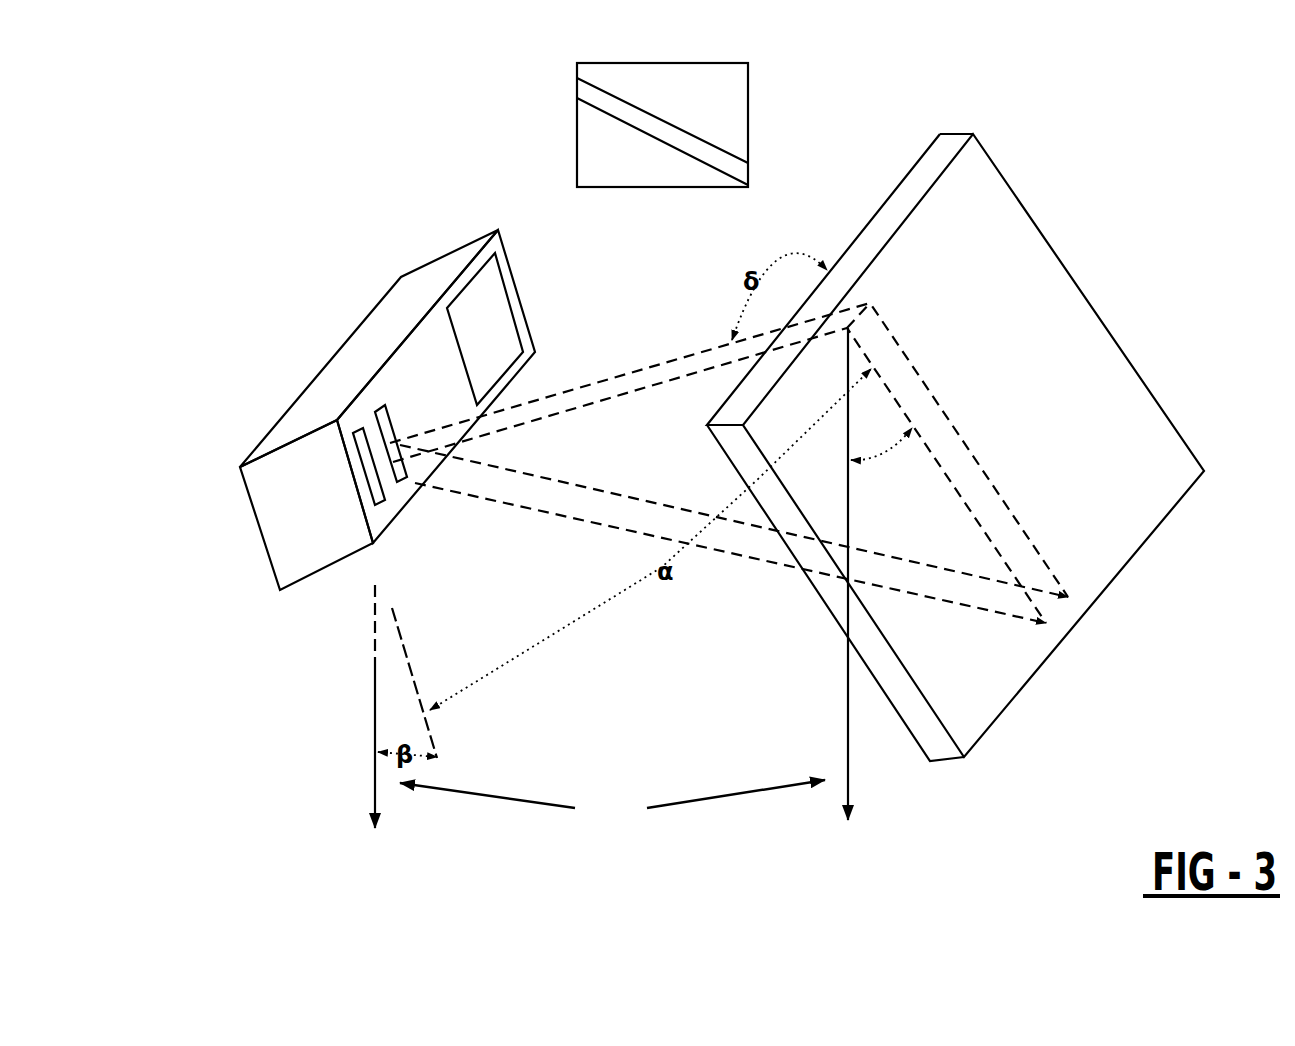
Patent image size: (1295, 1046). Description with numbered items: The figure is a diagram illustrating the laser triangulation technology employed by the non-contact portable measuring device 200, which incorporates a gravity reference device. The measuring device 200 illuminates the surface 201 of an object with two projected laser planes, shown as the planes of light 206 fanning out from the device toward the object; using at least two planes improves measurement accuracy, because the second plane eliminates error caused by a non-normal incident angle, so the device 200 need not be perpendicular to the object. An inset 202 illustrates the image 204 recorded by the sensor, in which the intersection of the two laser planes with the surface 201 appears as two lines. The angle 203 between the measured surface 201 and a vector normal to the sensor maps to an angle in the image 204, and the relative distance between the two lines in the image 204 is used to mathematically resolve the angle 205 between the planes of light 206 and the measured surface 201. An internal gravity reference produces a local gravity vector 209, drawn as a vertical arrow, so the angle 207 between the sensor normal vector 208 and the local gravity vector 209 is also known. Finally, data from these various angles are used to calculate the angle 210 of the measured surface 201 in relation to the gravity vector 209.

The portable measuring device 200 is at (295, 508).
The surface 201 is at (833, 618).
The inset 202 is at (755, 147).
The angle 203 is at (656, 593).
The image 204 is at (702, 140).
The angle 205 is at (788, 243).
The planes of light 206 is at (600, 400).
The angle 207 is at (393, 735).
The sensor normal vector 208 is at (413, 635).
The local gravity vector 209 is at (612, 804).
The angle 210 is at (890, 471).